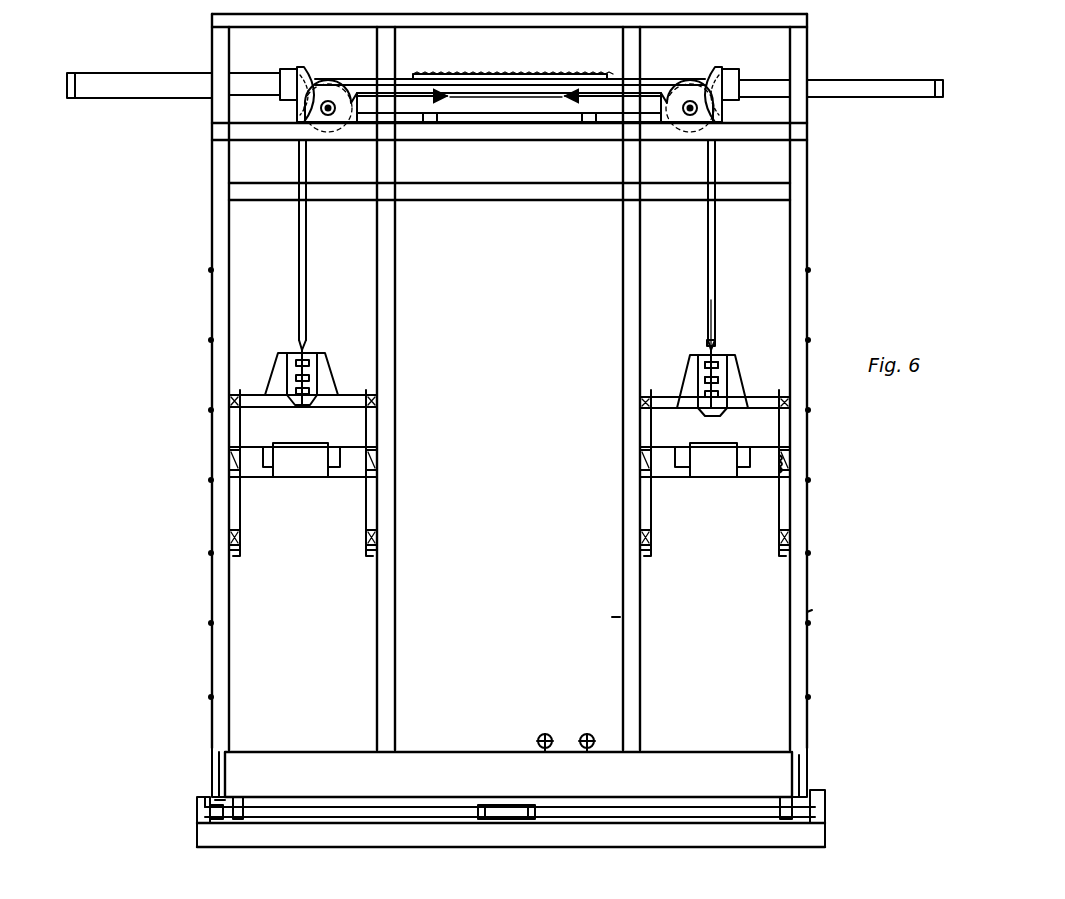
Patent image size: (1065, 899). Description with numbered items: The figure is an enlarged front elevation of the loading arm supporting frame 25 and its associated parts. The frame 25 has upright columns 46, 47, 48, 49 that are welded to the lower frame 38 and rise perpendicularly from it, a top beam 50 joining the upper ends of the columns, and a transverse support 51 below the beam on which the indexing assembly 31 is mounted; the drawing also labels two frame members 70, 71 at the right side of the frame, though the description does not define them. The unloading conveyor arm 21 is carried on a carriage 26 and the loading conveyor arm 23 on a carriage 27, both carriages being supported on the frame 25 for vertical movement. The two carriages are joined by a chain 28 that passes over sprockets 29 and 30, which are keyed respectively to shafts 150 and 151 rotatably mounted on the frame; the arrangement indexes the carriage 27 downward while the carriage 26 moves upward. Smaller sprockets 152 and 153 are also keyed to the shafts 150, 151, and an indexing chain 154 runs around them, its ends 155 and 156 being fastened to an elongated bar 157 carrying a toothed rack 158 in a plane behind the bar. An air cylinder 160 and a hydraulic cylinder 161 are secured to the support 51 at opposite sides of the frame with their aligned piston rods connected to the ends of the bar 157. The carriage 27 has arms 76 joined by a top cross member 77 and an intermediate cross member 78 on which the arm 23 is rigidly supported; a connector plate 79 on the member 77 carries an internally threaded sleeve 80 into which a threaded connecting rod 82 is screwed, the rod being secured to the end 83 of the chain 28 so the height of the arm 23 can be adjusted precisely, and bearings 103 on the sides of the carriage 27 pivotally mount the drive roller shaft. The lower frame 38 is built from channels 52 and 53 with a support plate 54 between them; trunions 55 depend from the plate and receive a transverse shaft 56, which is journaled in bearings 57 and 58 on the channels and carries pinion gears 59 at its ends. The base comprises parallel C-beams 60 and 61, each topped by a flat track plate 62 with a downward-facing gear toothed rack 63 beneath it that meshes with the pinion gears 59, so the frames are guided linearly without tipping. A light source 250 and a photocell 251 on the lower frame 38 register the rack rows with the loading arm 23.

The frame 25 is at (207, 262).
The upright column 46 is at (210, 651).
The upright column 47 is at (397, 615).
The right inner frame post 70 is at (622, 572).
The right outer frame post 71 is at (797, 573).
The upright column 48 is at (618, 617).
The upright column 49 is at (811, 612).
The top beam 50 is at (410, 34).
The transverse support 51 is at (418, 141).
The air cylinder 160 is at (146, 50).
The hydraulic cylinder 161 is at (840, 82).
The smaller diameter sprocket 152 is at (316, 84).
The smaller diameter sprocket 153 is at (688, 100).
The shaft 150 is at (333, 101).
The shaft 151 is at (698, 93).
The sprocket 29 is at (343, 137).
The sprocket 30 is at (671, 135).
The indexing chain 154 is at (609, 120).
The end of chain 155 is at (562, 102).
The end of chain 156 is at (452, 102).
The elongated bar 157 is at (512, 124).
The toothed rack 158 is at (432, 74).
The indexing assembly 31 is at (504, 67).
The chain 28 is at (307, 253).
The carriage 26 is at (346, 412).
The carriage 27 is at (745, 425).
The unloading conveyor arm 21 is at (298, 463).
The loading conveyor arm 23 is at (712, 461).
The top cross member 77 is at (666, 400).
The intermediate cross member 78 is at (663, 455).
The arm 76 is at (650, 533).
The bearing 103 is at (772, 472).
The threaded connecting rod 82 is at (709, 340).
The end of chain 83 is at (717, 340).
The connector plate 79 is at (698, 365).
The internally threaded sleeve 80 is at (720, 366).
The support plate 54 is at (411, 797).
The channel 52 is at (215, 768).
The channel 53 is at (804, 771).
The trunion 55 is at (540, 806).
The shaft 56 is at (613, 813).
The bearing 57 is at (240, 805).
The bearing 58 is at (788, 806).
The pinion gear 59 is at (200, 822).
The C-beam 60 is at (200, 840).
The C-beam 61 is at (826, 838).
The track plate 62 is at (206, 797).
The gear toothed rack 63 is at (205, 817).
The lower frame 38 is at (485, 748).
The light source 250 is at (604, 712).
The photocell 251 is at (545, 733).